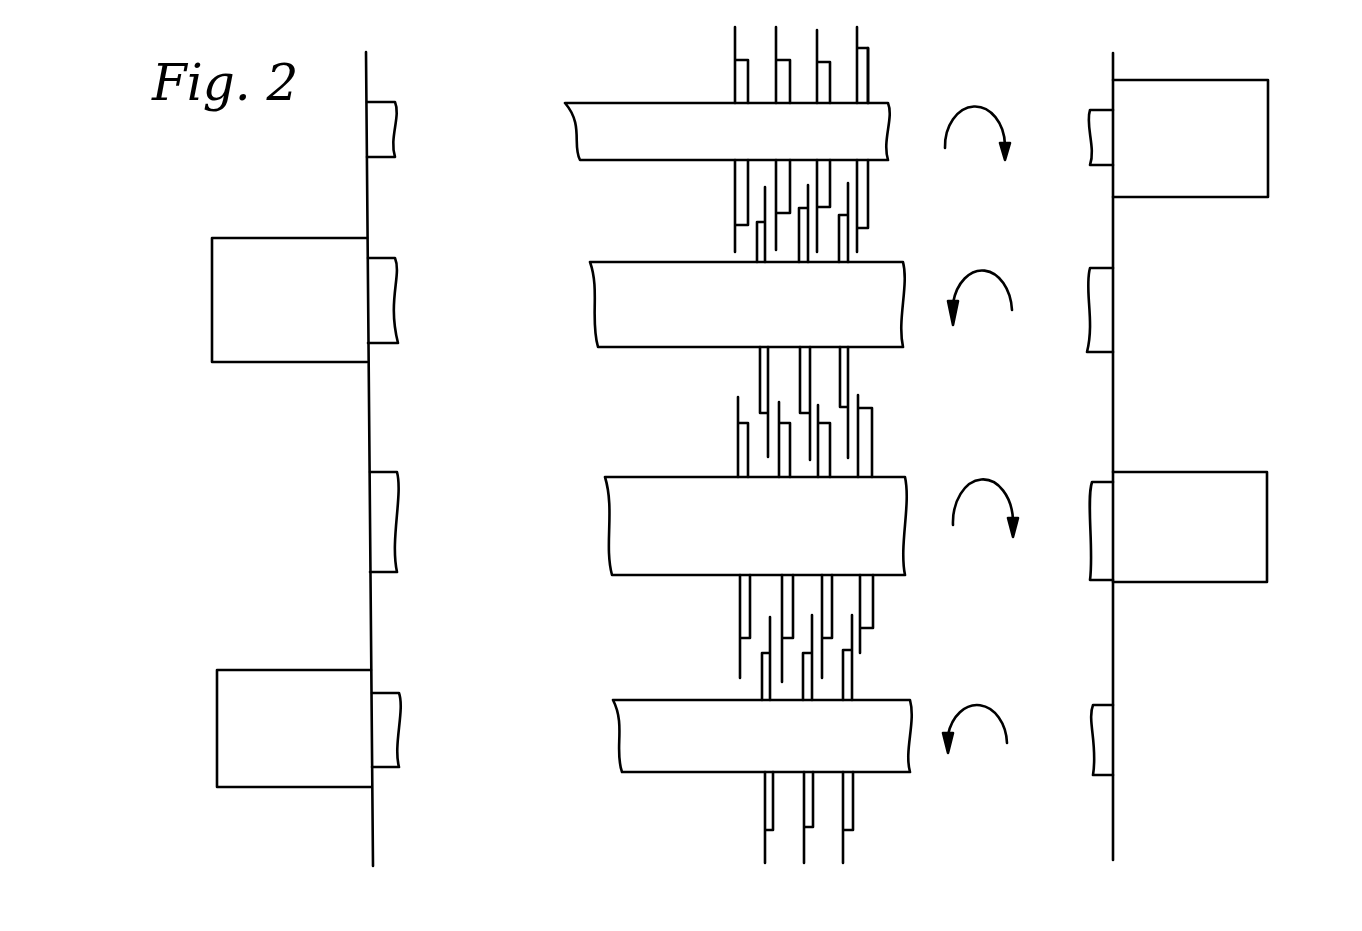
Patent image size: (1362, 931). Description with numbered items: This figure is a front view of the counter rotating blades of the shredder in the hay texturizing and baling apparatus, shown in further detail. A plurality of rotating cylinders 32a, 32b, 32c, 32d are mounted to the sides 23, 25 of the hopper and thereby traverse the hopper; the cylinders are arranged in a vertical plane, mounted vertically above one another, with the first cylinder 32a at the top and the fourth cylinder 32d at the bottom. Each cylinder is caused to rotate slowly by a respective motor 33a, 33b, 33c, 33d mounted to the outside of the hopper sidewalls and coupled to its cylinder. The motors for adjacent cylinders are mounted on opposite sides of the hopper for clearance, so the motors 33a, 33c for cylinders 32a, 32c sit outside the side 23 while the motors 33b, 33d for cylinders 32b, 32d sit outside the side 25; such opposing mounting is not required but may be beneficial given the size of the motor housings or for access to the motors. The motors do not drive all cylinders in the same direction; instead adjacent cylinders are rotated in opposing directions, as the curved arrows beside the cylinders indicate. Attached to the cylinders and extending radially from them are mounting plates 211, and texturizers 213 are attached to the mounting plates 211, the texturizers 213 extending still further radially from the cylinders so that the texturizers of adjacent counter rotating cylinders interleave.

The side of the hopper 23 is at (1113, 665).
The side of the hopper 25 is at (368, 618).
The mounting plate 211 is at (870, 82).
The texturizer 213 is at (860, 35).
The rotating cylinder 32a is at (626, 90).
The rotating cylinder 32b is at (650, 245).
The rotating cylinder 32c is at (665, 445).
The rotating cylinder 32d is at (686, 668).
The motor 33a is at (1268, 178).
The motor 33b is at (255, 238).
The motor 33c is at (1268, 560).
The motor 33d is at (257, 670).